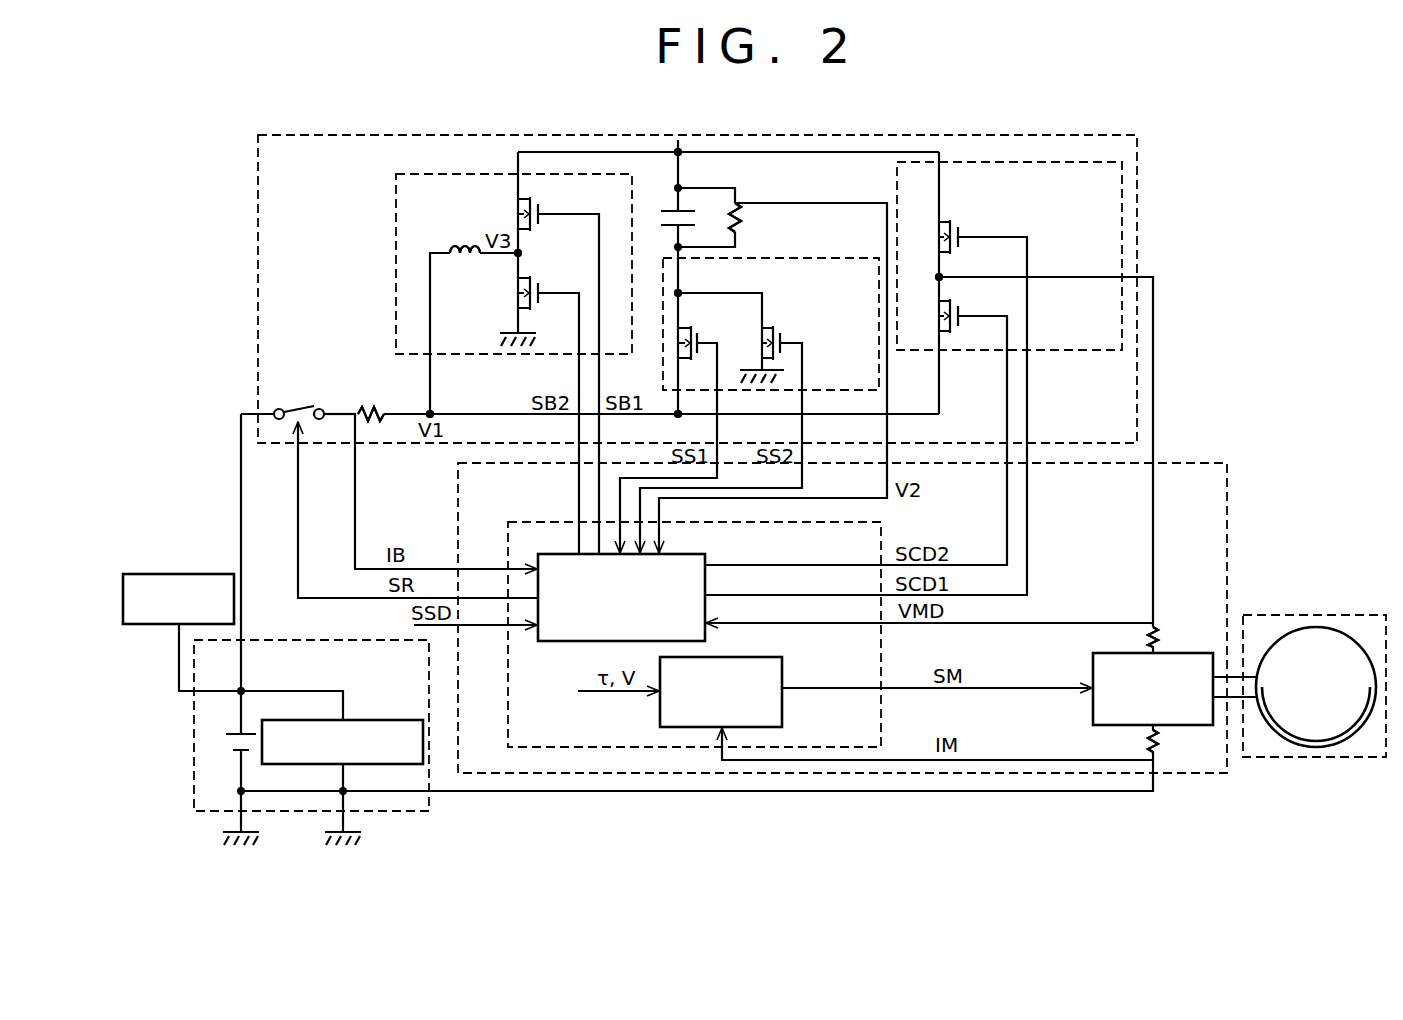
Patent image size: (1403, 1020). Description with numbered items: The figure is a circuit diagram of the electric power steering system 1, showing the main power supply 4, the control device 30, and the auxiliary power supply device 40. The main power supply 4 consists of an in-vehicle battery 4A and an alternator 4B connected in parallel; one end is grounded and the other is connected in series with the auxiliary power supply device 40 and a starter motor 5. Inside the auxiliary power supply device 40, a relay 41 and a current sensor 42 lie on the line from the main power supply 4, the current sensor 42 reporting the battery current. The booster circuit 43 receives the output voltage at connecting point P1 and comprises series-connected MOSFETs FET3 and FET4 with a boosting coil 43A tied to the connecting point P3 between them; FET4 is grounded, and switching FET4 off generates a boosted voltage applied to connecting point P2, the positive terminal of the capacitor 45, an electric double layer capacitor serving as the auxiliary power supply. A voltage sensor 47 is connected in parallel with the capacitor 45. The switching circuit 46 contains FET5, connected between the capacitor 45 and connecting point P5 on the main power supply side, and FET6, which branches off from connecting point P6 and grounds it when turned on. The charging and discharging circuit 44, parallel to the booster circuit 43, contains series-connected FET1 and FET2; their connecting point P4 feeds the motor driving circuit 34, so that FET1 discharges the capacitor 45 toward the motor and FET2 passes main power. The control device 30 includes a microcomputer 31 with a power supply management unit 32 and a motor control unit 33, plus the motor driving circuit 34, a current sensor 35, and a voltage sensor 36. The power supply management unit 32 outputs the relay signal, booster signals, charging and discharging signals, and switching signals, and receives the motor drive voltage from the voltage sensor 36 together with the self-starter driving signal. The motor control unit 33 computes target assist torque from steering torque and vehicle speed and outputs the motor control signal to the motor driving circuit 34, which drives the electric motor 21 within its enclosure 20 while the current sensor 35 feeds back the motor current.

The electric power steering system 1 is at (176, 124).
The auxiliary power supply device 40 is at (261, 124).
The booster circuit 43 is at (396, 312).
The boosting coil 43A is at (458, 246).
The FET 3 FET3 is at (540, 216).
The FET 4 FET4 is at (539, 288).
The connecting point P3 is at (517, 260).
The connecting point P1 is at (433, 412).
The relay 41 is at (320, 409).
The current sensor 42 is at (365, 407).
The connecting point P2 is at (678, 141).
The capacitor 45 is at (672, 210).
The switching circuit 46 is at (659, 278).
The voltage sensor 47 is at (741, 218).
The connecting point P6 is at (682, 292).
The connecting point P5 is at (677, 416).
The FET 5 FET5 is at (720, 325).
The FET 6 FET6 is at (780, 341).
The charging and discharging circuit 44 is at (1122, 213).
The FET 1 FET1 is at (962, 241).
The FET 2 FET2 is at (963, 313).
The connecting point P4 is at (939, 281).
The control device 30 is at (1242, 454).
The microcomputer 31 is at (514, 698).
The power supply management unit 32 is at (553, 643).
The motor control unit 33 is at (660, 714).
The motor driving circuit 34 is at (1191, 653).
The current sensor 35 is at (1148, 744).
The voltage sensor 36 is at (1148, 642).
The electric motor 20 is at (1313, 614).
The electric motor 21 is at (1314, 748).
The starter motor 5 is at (181, 574).
The main power supply 4 is at (278, 640).
The in-vehicle battery 4A is at (226, 735).
The alternator 4B is at (405, 764).